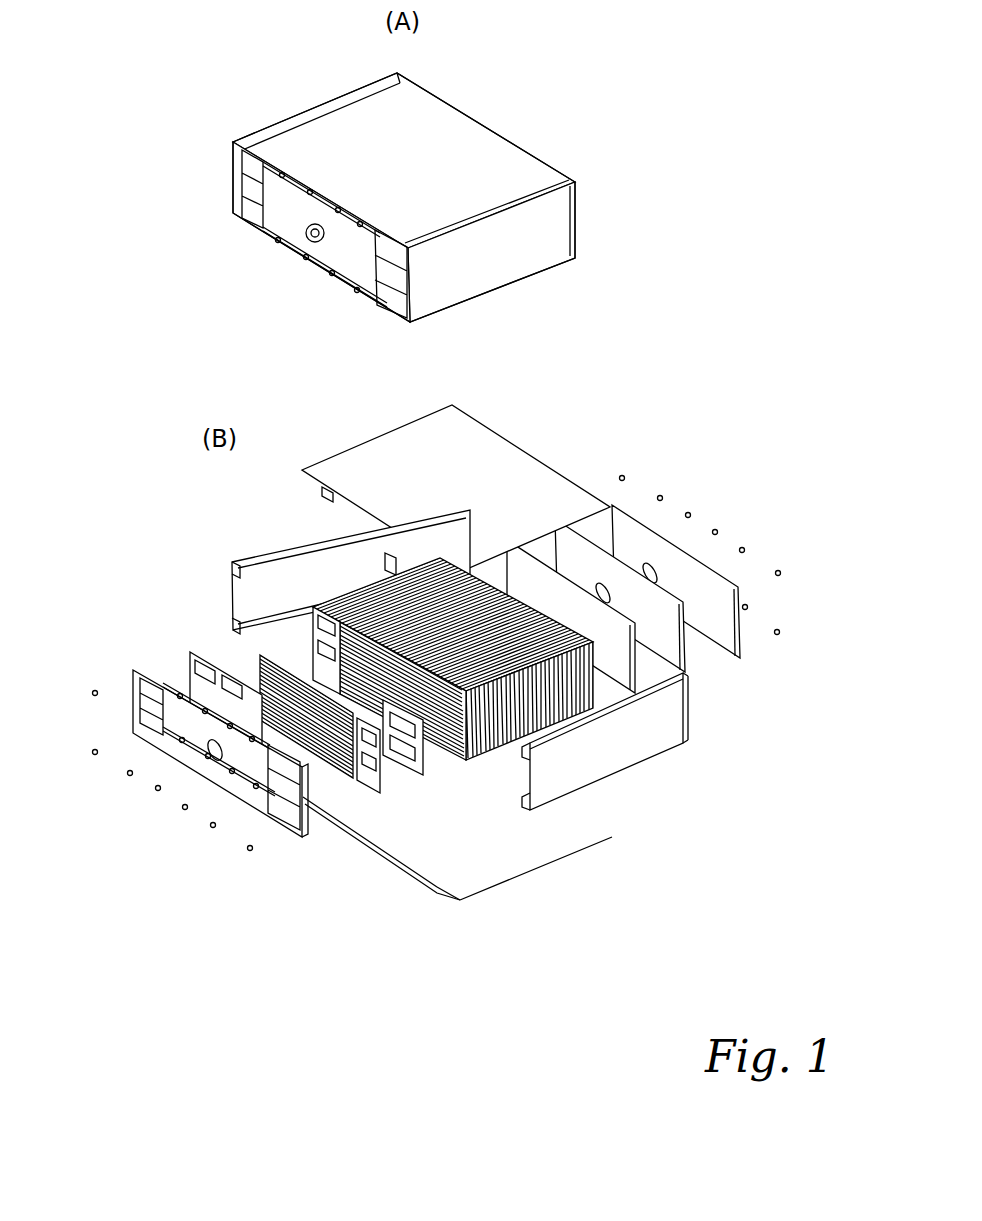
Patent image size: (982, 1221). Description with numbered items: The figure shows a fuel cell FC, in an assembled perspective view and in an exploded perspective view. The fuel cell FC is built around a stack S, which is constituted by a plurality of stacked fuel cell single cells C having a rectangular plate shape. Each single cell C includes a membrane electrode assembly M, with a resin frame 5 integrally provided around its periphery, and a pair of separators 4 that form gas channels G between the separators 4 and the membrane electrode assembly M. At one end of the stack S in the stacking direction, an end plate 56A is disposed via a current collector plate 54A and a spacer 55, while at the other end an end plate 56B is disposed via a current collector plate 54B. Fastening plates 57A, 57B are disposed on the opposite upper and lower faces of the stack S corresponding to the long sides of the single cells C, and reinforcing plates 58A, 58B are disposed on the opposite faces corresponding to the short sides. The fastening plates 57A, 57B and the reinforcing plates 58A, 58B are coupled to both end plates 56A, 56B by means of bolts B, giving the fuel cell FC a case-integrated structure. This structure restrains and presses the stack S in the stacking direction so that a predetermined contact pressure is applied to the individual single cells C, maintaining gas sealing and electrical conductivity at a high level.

The fuel cell FC is at (590, 92).
The fastening plate 57A is at (327, 120).
The fastening plate 57B is at (513, 870).
The reinforcing plate 58A is at (252, 132).
The reinforcing plate 58B is at (490, 278).
The end plate 56A is at (727, 577).
The end plate 56B is at (343, 258).
The current collector plate 54A is at (603, 620).
The current collector plate 54B is at (180, 660).
The spacer 55 is at (660, 597).
The stack S is at (575, 680).
The resin frame 5 is at (390, 762).
The single cell C is at (387, 803).
The separator 4 is at (355, 775).
The gas channel G is at (287, 643).
The membrane electrode assembly M is at (373, 573).
The bolt B is at (660, 498).